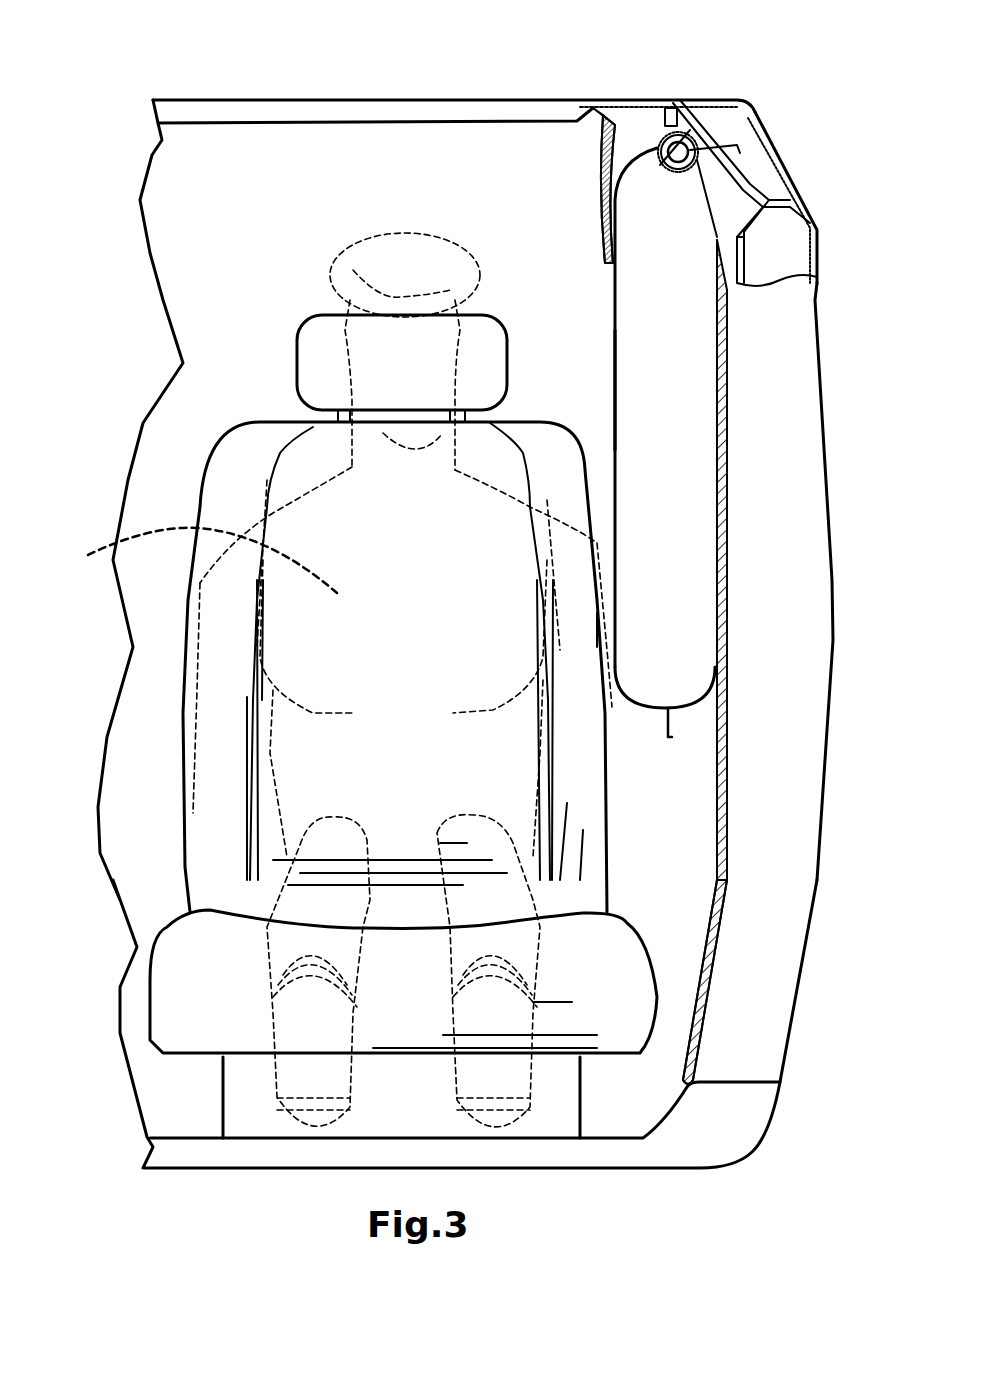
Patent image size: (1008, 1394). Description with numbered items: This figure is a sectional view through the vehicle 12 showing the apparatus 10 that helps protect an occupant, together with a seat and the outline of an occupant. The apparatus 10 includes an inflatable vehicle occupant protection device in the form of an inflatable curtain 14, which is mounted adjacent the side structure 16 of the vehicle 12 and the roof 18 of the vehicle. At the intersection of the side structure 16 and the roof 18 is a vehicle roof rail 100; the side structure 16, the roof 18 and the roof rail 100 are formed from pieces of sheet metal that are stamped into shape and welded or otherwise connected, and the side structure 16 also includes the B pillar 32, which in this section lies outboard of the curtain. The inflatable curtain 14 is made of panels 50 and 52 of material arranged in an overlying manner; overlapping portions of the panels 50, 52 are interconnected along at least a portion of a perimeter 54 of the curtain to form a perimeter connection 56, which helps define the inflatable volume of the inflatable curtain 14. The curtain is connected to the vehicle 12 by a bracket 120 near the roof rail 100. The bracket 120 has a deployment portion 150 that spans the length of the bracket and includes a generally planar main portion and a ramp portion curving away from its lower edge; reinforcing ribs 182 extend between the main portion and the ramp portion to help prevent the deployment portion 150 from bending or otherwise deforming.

The apparatus 10 is at (712, 74).
The vehicle 12 is at (248, 66).
The inflatable curtain 14 is at (615, 333).
The side structure 16 is at (805, 372).
The roof 18 is at (413, 110).
The B pillar 32 is at (773, 257).
The panel 50 is at (717, 343).
The panel 52 is at (615, 392).
The perimeter 54 is at (668, 737).
The perimeter connection 56 is at (673, 740).
The vehicle roof rail 100 is at (700, 140).
The bracket 120 is at (727, 173).
The deployment portion 150 is at (717, 730).
The reinforcing ribs 182 is at (96, 548).